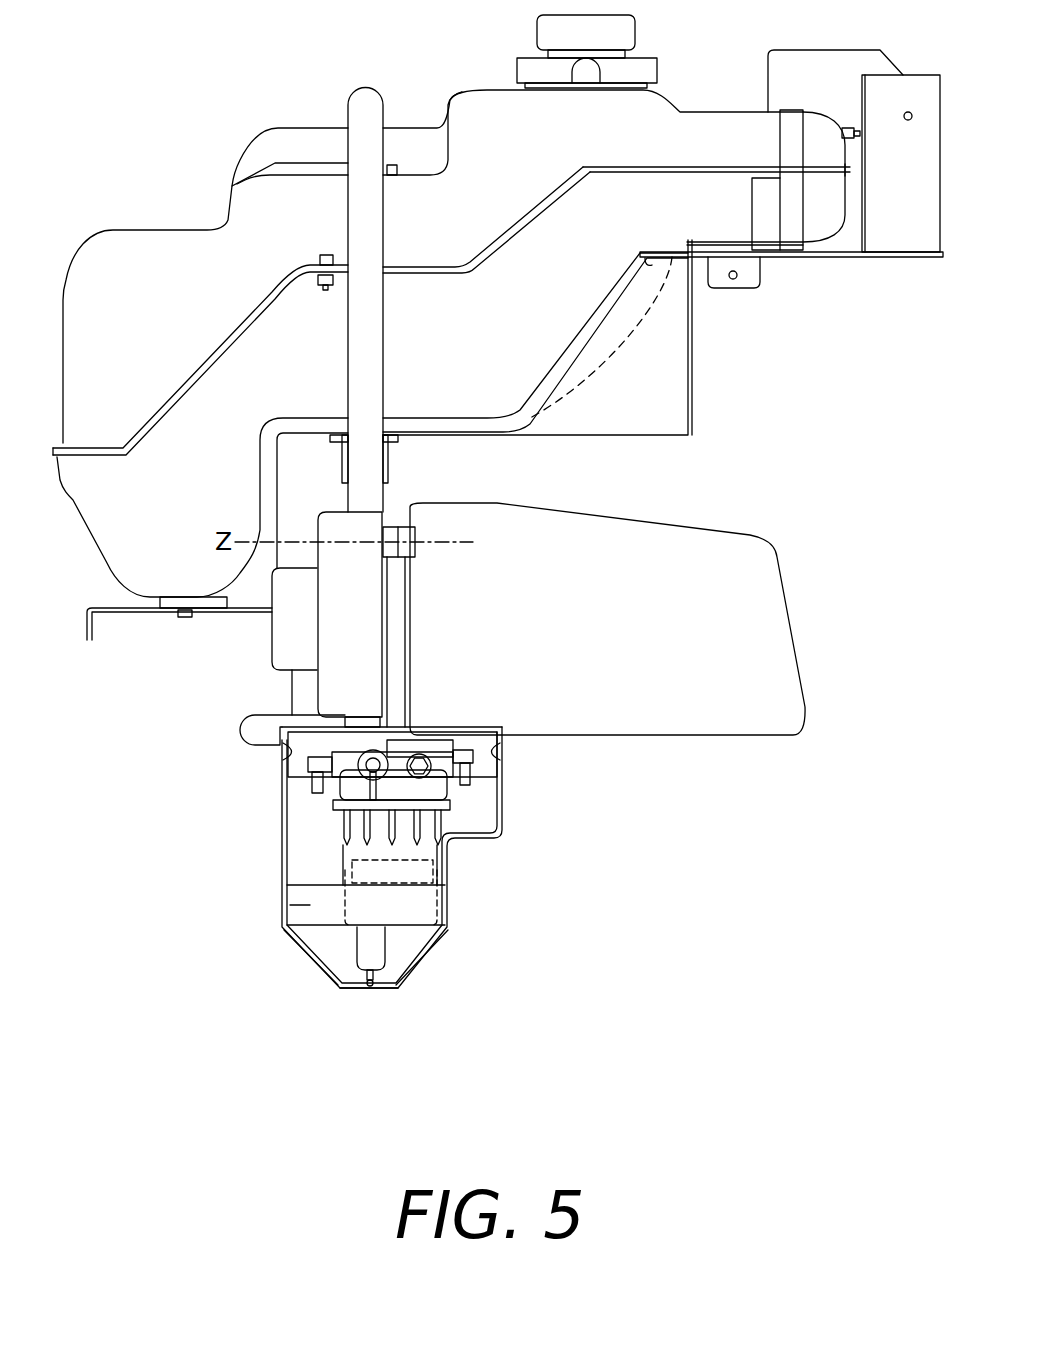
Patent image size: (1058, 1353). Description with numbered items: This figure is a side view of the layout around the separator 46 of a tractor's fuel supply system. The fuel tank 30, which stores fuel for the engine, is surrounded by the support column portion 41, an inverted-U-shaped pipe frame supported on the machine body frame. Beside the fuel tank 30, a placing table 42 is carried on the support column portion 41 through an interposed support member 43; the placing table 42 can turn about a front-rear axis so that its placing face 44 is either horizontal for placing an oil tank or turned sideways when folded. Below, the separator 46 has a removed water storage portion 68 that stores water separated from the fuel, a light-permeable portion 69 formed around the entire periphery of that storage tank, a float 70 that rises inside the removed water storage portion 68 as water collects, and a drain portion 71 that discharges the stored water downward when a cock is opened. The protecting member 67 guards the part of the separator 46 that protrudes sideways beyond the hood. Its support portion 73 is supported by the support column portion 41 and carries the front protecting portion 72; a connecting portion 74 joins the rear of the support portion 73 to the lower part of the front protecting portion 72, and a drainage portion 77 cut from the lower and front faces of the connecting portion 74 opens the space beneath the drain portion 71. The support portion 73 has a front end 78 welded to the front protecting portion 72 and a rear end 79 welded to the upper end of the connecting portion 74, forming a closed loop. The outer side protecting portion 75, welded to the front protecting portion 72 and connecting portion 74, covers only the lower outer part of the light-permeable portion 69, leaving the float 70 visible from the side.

The fuel tank 30 is at (168, 252).
The support column portion 41 is at (363, 345).
The placing table 42 is at (621, 601).
The support member 43 is at (360, 520).
The placing face 44 is at (705, 575).
The separator 46 is at (310, 841).
The protecting member 67 is at (260, 951).
The removed water storage portion 68 is at (363, 850).
The light-permeable portion 69 is at (442, 845).
The float 70 is at (452, 872).
The drain portion 71 is at (362, 973).
The front protecting portion 72 is at (503, 808).
The support portion 73 is at (365, 740).
The connecting portion 74 is at (307, 955).
The outer side protecting portion 75 is at (310, 905).
The drainage portion 77 is at (425, 962).
The front end 78 is at (483, 750).
The rear end 79 is at (293, 750).